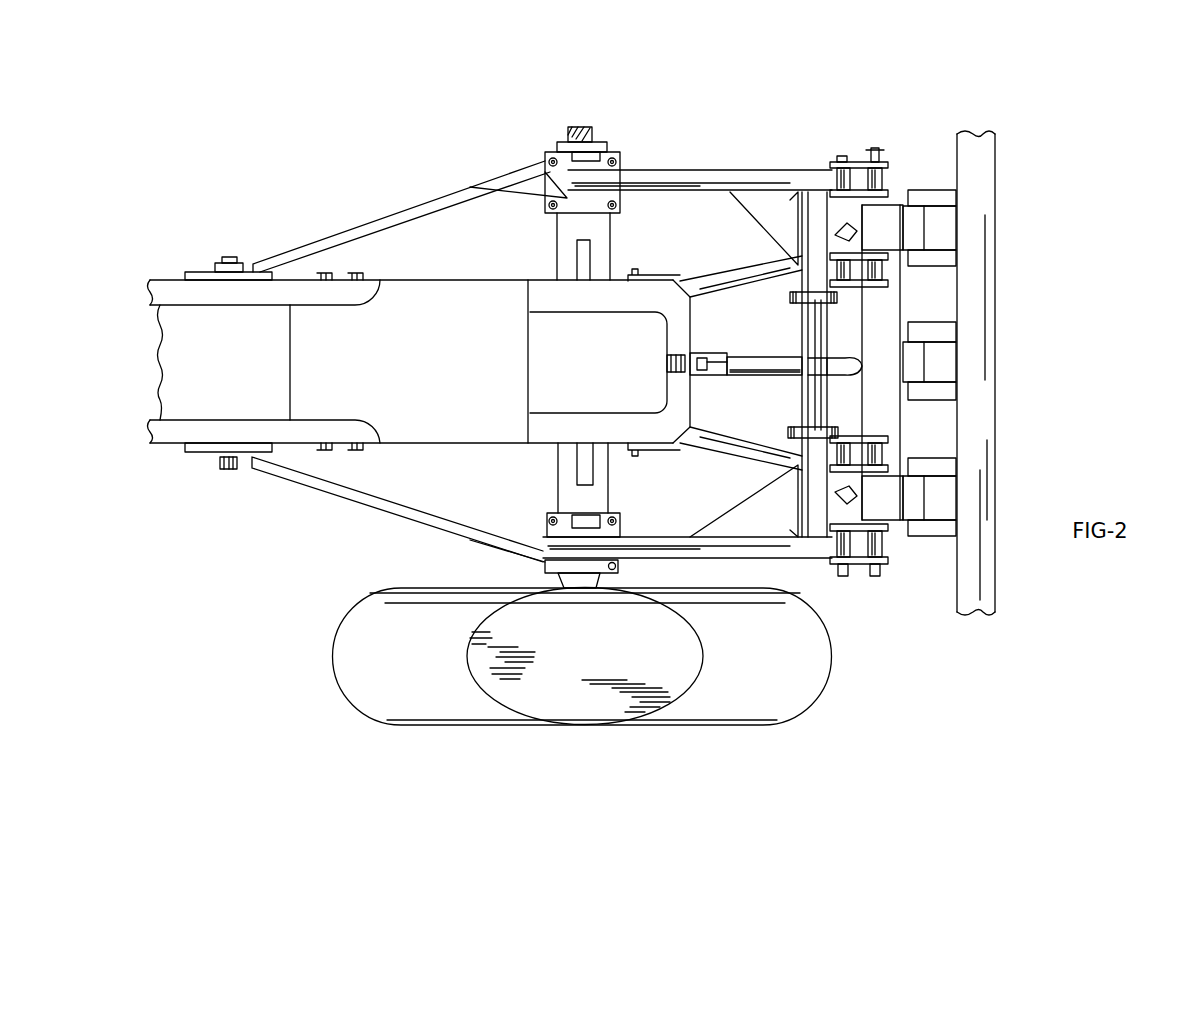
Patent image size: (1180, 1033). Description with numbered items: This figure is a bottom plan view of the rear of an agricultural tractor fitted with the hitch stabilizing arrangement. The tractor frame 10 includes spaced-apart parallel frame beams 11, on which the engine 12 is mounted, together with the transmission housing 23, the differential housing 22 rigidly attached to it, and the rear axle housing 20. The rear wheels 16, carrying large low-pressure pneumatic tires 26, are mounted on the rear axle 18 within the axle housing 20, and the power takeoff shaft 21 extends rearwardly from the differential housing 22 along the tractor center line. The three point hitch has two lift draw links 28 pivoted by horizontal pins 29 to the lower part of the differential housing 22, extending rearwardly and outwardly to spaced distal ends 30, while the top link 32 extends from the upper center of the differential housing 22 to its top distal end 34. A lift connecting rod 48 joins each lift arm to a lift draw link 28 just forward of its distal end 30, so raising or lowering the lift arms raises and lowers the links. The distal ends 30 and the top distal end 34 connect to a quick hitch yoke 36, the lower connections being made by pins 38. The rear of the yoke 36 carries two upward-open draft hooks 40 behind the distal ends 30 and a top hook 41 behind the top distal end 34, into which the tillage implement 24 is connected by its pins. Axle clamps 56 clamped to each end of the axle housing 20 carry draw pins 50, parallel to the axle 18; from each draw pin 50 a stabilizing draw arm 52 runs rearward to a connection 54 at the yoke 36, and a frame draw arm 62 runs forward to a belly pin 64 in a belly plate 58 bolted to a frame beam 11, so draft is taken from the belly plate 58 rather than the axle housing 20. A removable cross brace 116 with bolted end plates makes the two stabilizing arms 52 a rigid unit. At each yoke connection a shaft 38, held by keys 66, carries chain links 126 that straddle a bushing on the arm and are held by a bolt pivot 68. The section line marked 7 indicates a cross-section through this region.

The frame 10 is at (262, 482).
The frame beams 11 is at (150, 322).
The engine 12 is at (202, 381).
The rear wheels 16 is at (340, 660).
The axle 18 is at (583, 124).
The axle housing 20 is at (605, 230).
The power takeoff shaft 21 is at (672, 350).
The differential housing 22 is at (570, 311).
The transmission housing 23 is at (355, 381).
The tillage implement 24 is at (980, 262).
The pneumatic tires 26 is at (388, 675).
The lift draw links 28 is at (738, 258).
The pins 29 is at (638, 272).
The distal end 30 is at (862, 215).
The top link 32 is at (790, 375).
The top distal end 34 is at (852, 372).
The quick hitch yoke 36 is at (870, 340).
The pin 38 is at (878, 150).
The draft hooks 40 is at (930, 235).
The top hook 41 is at (925, 362).
The lift connecting rod 48 is at (735, 280).
The draw pin 50 is at (612, 160).
The stabilizing draw arm 52 is at (745, 175).
The connection 54 is at (903, 570).
The axle clamp 56 is at (550, 160).
The belly plate 58 is at (185, 274).
The frame draw arm 62 is at (395, 505).
The belly pin 64 is at (222, 462).
The key 66 is at (876, 578).
The bolt pivot 68 is at (843, 580).
The section line 7- 7 is at (898, 152).
The cross brace 116 is at (802, 330).
The chain links 126 is at (840, 162).